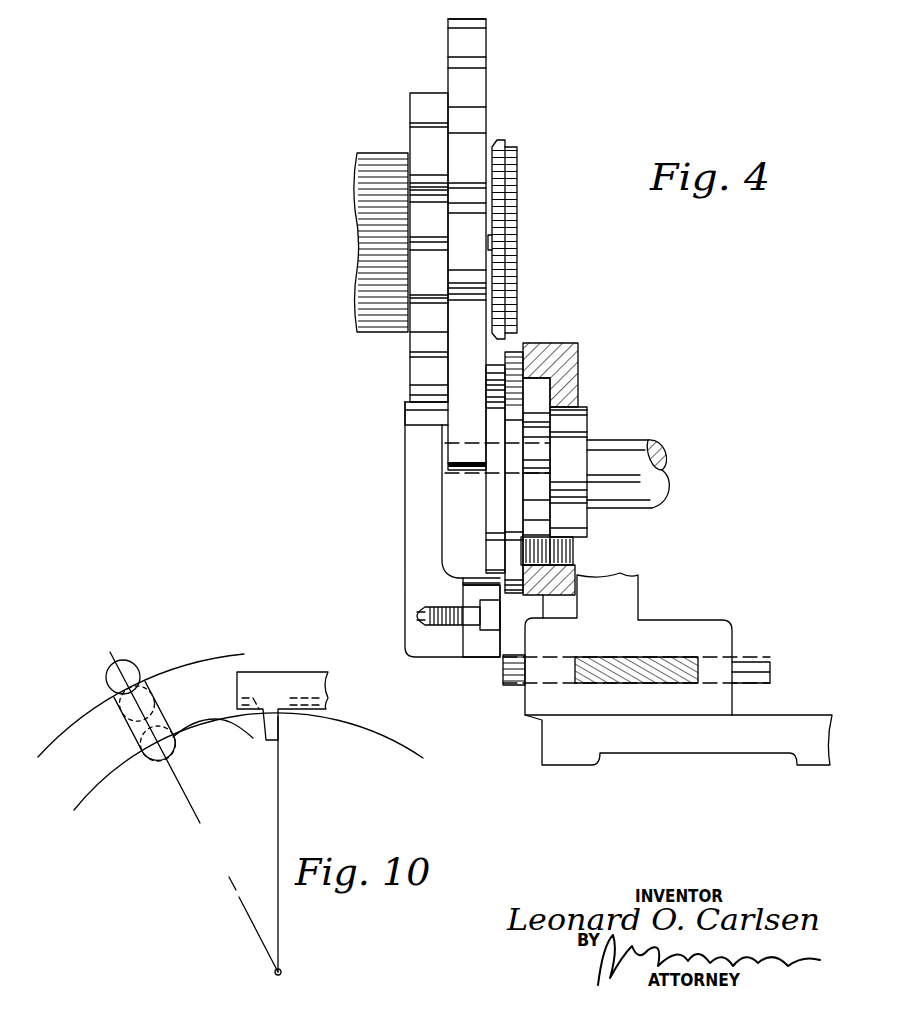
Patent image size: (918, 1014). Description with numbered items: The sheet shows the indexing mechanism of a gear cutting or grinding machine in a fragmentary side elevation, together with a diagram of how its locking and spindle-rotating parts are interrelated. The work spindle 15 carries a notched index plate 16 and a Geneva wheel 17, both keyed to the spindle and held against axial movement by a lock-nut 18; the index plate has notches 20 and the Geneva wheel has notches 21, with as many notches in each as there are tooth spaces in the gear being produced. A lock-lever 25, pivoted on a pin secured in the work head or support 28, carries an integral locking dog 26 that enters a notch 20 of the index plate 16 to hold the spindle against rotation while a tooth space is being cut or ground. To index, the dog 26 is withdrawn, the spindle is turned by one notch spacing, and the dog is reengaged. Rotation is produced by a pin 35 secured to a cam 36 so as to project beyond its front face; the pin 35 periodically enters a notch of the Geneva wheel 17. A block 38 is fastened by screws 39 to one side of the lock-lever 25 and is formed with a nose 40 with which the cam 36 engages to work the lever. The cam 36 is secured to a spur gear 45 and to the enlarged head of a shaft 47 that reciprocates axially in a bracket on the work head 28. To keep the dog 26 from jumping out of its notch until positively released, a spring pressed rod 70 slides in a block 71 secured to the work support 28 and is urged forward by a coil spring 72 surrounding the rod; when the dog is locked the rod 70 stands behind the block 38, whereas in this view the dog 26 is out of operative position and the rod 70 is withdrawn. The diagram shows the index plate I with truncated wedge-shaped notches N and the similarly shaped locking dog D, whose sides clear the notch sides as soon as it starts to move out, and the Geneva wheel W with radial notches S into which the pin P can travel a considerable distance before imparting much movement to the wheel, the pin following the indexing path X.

In FIG. 4, the work spindle 15 is at (393, 267).
In FIG. 4, the notched index plate 16 is at (428, 328).
In FIG. 4, the Geneva wheel 17 is at (465, 42).
In FIG. 4, the lock-nut 18 is at (498, 183).
In FIG. 4, the notches of the index plate 20 is at (420, 195).
In FIG. 4, the notches of the Geneva wheel 21 is at (477, 62).
In FIG. 4, the lock-lever 25 is at (423, 563).
In FIG. 4, the locking dog 26 is at (417, 410).
In FIG. 4, the work head or support 28 is at (668, 733).
In FIG. 4, the pin 35 is at (483, 478).
In FIG. 4, the cam 36 is at (492, 517).
In FIG. 4, the block 38 is at (485, 638).
In FIG. 4, the screws 39 is at (453, 625).
In FIG. 4, the nose 40 is at (472, 556).
In FIG. 4, the spur gear 45 is at (567, 392).
In FIG. 4, the shaft 47 is at (637, 437).
In FIG. 4, the spring pressed rod 70 is at (520, 688).
In FIG. 4, the block 71 is at (683, 633).
In FIG. 4, the coil spring 72 is at (630, 640).
In FIG. 10, the pin P is at (128, 668).
In FIG. 10, the Geneva wheel W is at (180, 665).
In FIG. 10, the notches of the Geneva wheel S is at (140, 747).
In FIG. 10, the index plate I is at (90, 790).
In FIG. 10, the path of movement of the pin X is at (210, 738).
In FIG. 10, the locking dog D is at (283, 740).
In FIG. 10, the notches of the index plate N is at (283, 750).